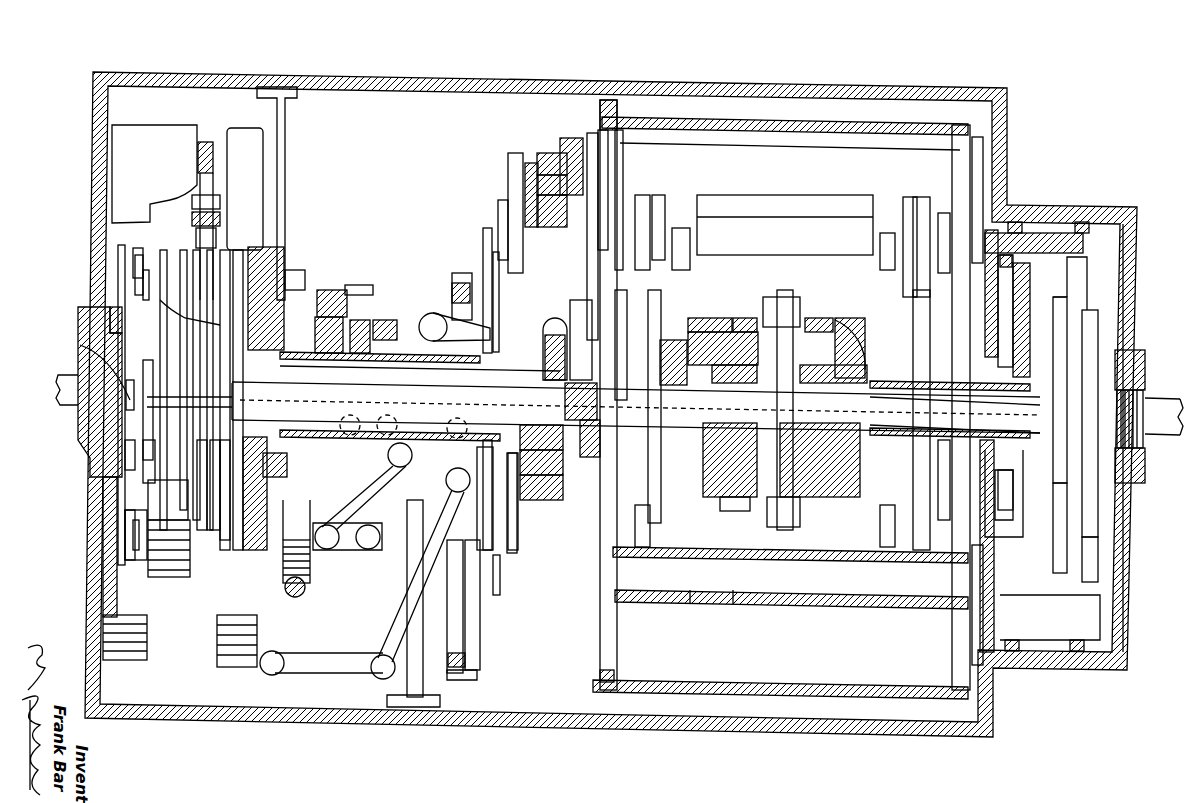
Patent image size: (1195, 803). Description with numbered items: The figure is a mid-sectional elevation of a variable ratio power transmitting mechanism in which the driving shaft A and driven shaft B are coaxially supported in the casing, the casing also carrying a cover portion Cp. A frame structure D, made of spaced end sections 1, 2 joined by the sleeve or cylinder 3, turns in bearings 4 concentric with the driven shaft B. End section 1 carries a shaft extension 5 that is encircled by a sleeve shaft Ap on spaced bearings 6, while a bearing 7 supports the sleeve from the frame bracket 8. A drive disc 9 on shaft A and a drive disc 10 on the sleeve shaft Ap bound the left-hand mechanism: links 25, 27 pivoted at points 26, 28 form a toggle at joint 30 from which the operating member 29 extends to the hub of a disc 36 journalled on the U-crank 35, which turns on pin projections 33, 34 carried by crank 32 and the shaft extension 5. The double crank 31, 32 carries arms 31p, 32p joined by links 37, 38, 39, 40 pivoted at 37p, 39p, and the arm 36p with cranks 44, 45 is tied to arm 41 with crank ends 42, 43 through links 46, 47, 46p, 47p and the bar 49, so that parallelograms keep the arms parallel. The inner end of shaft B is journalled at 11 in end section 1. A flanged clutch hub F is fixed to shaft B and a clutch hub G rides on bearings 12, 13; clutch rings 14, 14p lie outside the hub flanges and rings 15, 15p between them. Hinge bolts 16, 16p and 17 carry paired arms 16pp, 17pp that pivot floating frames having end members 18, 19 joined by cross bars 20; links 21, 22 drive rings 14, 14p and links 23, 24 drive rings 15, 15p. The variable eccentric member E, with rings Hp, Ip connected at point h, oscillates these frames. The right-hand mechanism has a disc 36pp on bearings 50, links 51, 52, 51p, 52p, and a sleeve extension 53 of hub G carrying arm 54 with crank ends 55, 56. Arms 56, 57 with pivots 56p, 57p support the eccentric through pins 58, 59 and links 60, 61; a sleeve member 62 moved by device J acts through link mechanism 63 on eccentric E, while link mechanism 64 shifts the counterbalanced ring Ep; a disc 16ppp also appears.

The end section 1 is at (604, 657).
The end section 2 is at (117, 730).
The sleeve or cylinder 3 is at (193, 742).
The bearings 4 is at (487, 745).
The shaft extension 5 is at (665, 750).
The bearings 6 is at (480, 380).
The bearing 7 is at (563, 770).
The frame bracket 8 is at (288, 240).
The drive disc 9 is at (147, 128).
The drive disc 10 is at (245, 135).
The journal 11 is at (582, 382).
The bearing 12 is at (800, 392).
The bearing 13 is at (1055, 375).
The clutch rings 14 is at (715, 318).
The clutch rings 14p is at (710, 457).
The clutch ring 15 is at (745, 318).
The clutch rings 15p is at (740, 500).
The hinge bolt 16 is at (691, 604).
The hinge bolt 16p is at (785, 225).
The paired arms 16pp is at (985, 165).
The disc 16ppp is at (590, 133).
The hinge bolt 17 is at (733, 604).
The paired arms 17pp is at (955, 560).
The end members 18 is at (588, 325).
The end members 19 is at (925, 362).
The cross bars 20 is at (790, 562).
The pivotal links 21 is at (912, 270).
The pivotal links 22 is at (769, 349).
The link 23 is at (780, 527).
The pivotal link 24 is at (675, 280).
The link 25 is at (192, 218).
The pivot point 26 is at (160, 252).
The link 27 is at (192, 196).
The pivot point 28 is at (210, 140).
The operating member 29 is at (222, 292).
The pivotal connecting joint 30 is at (196, 236).
The crank 31 is at (125, 410).
The arm 31p is at (130, 425).
The crank 32 is at (195, 380).
The arm 32p is at (150, 465).
The pin projection 33 is at (80, 348).
The pin projection 34 is at (235, 402).
The U-crank 35 is at (155, 430).
The disc 36 is at (185, 510).
The arm 36p is at (172, 575).
The disc 36pp is at (1050, 616).
The link 37 is at (135, 450).
The pivotal connection 37p is at (133, 548).
The link 38 is at (137, 512).
The link 39 is at (135, 270).
The pivotal connection 39p is at (143, 285).
The link 40 is at (135, 328).
The arm 41 is at (228, 250).
The crank end 42 is at (288, 467).
The crank end 43 is at (238, 250).
The crank 44 is at (216, 532).
The crank 45 is at (205, 340).
The pivotal link 46 is at (215, 326).
The link 46p is at (232, 494).
The pivotal link 47 is at (235, 380).
The link 47p is at (205, 550).
The bar 49 is at (295, 270).
The bearings 50 is at (1080, 222).
The link element 51 is at (1015, 285).
The link element 51p is at (1023, 505).
The link element 52 is at (1013, 345).
The link element 52p is at (1013, 550).
The sleeve extension 53 is at (985, 352).
The arm 54 is at (1013, 302).
The crank end 55 is at (1034, 236).
The crank end 56 is at (517, 520).
The pivot point 56p is at (492, 590).
The arm 57 is at (493, 285).
The pivot point 57p is at (483, 245).
The pivot pin 58 is at (483, 498).
The pivot pin 59 is at (508, 165).
The supporting link 60 is at (517, 548).
The supporting link 61 is at (520, 230).
The sleeve member 62 is at (362, 296).
The link mechanism 63 is at (550, 318).
The link mechanism 64 is at (425, 470).
The driving shaft A is at (70, 372).
The sleeve shaft Ap is at (318, 290).
The driven shaft B is at (1165, 425).
The casing cover Cp is at (1128, 638).
The frame structure D is at (618, 628).
The variable eccentric member E is at (537, 210).
The counterbalanced ring Ep is at (465, 665).
The flanged clutch hub F is at (725, 510).
The clutch hub G is at (851, 318).
The ring Hp is at (525, 195).
The ring Ip is at (540, 156).
The parallel link motion device J is at (311, 551).
The point of connection h is at (565, 142).